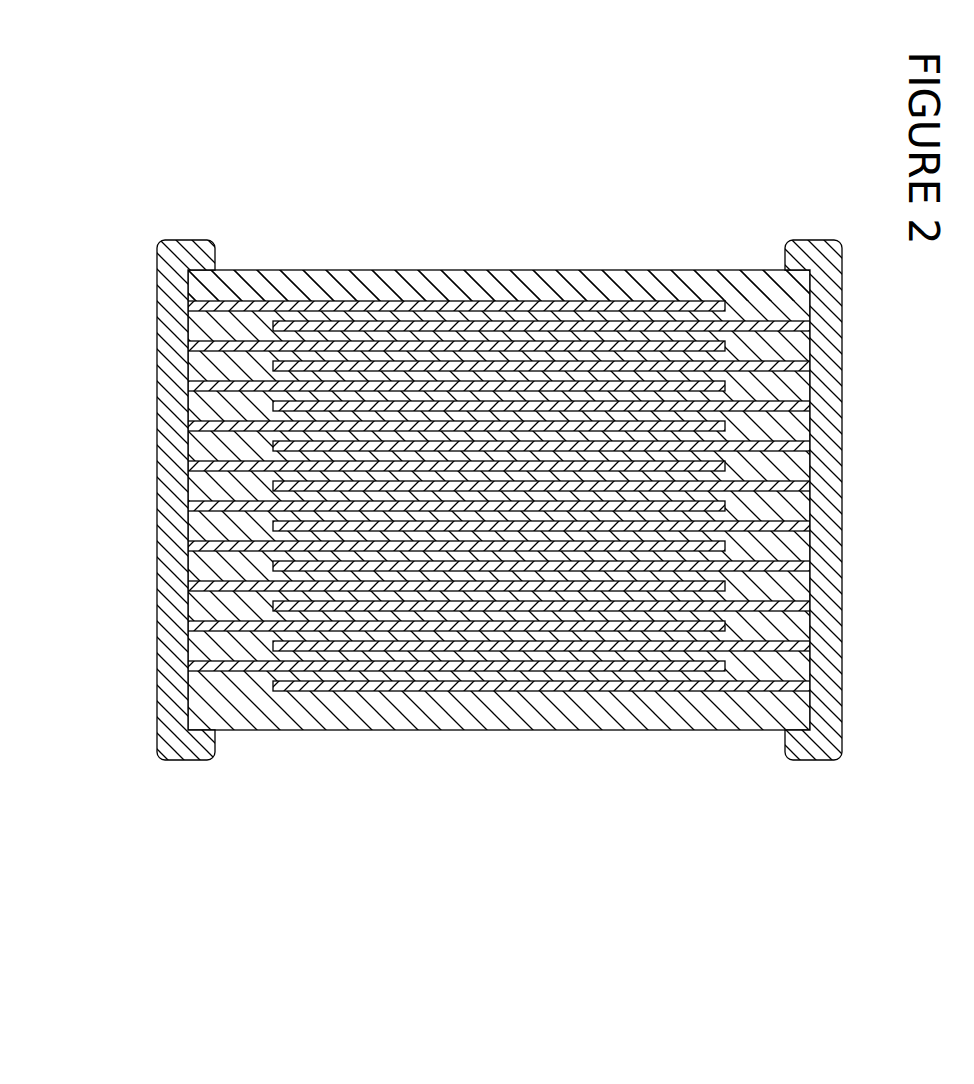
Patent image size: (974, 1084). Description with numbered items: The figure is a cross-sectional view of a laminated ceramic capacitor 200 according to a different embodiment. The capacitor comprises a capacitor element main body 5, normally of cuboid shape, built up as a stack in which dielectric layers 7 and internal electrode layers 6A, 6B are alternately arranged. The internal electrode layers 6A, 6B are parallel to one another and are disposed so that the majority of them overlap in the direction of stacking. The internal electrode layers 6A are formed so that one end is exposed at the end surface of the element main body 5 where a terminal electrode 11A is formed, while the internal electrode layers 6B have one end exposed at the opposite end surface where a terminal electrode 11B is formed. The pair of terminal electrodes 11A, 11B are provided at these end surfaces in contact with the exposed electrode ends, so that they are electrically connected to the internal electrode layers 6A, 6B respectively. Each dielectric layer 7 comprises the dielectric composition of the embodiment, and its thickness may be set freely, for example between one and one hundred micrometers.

The laminated ceramic capacitor 200 is at (499, 530).
The capacitor element main body 5 is at (499, 526).
The dielectric layer 7 is at (395, 276).
The internal electrode layer 6A is at (555, 270).
The internal electrode layer 6B is at (515, 730).
The terminal electrode 11A is at (176, 762).
The terminal electrode 11B is at (808, 240).